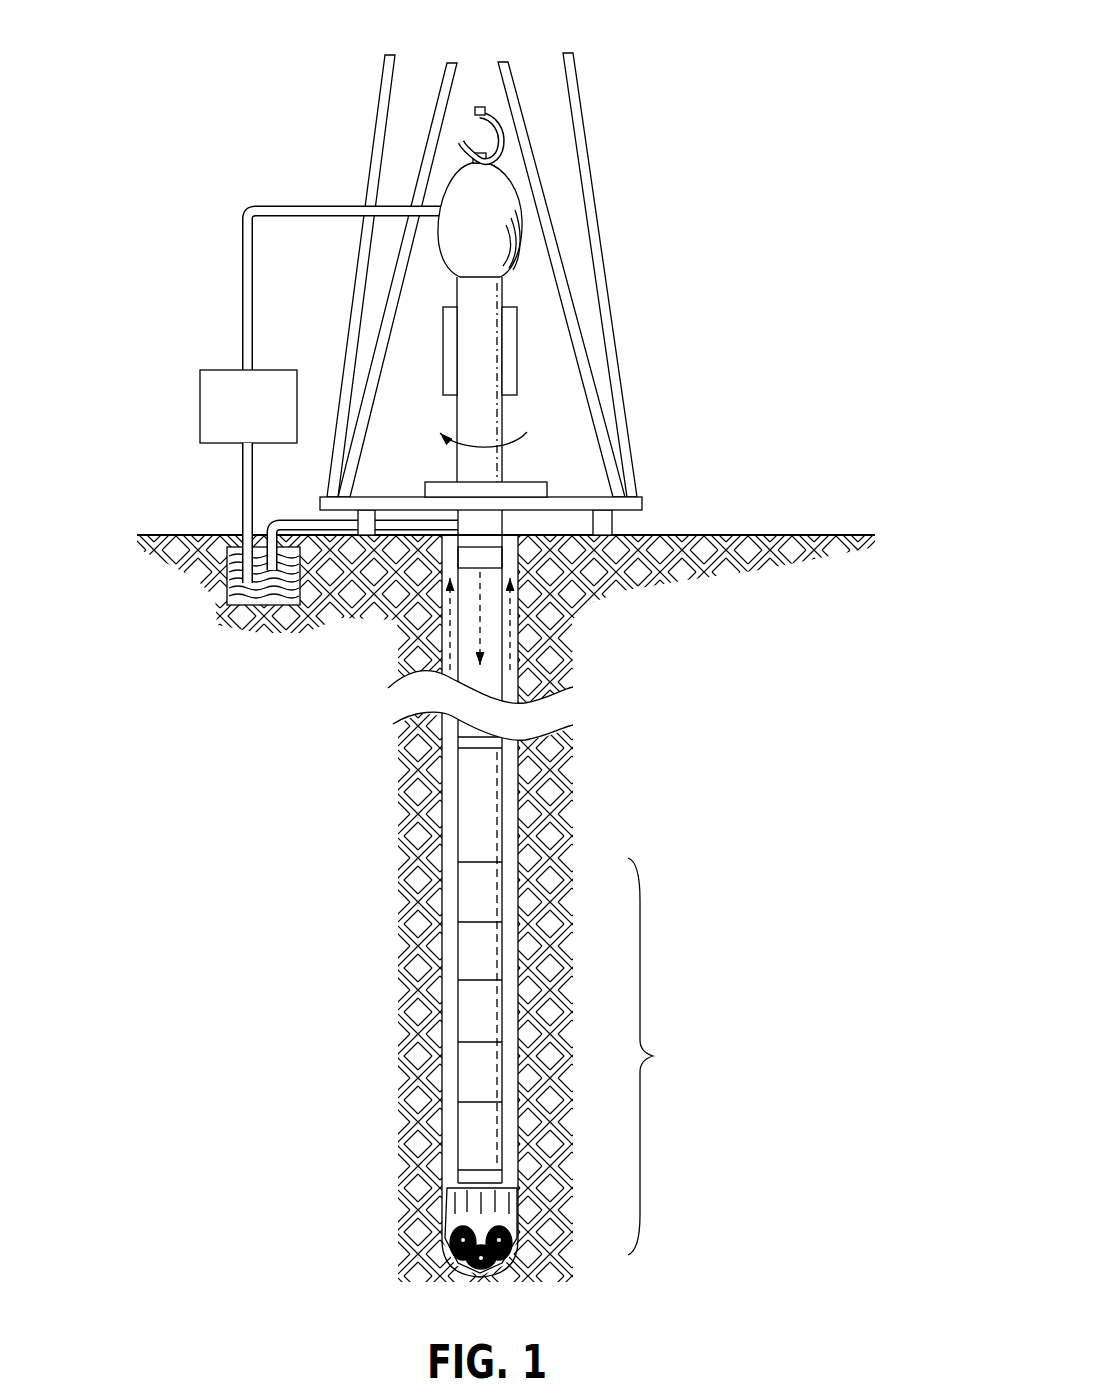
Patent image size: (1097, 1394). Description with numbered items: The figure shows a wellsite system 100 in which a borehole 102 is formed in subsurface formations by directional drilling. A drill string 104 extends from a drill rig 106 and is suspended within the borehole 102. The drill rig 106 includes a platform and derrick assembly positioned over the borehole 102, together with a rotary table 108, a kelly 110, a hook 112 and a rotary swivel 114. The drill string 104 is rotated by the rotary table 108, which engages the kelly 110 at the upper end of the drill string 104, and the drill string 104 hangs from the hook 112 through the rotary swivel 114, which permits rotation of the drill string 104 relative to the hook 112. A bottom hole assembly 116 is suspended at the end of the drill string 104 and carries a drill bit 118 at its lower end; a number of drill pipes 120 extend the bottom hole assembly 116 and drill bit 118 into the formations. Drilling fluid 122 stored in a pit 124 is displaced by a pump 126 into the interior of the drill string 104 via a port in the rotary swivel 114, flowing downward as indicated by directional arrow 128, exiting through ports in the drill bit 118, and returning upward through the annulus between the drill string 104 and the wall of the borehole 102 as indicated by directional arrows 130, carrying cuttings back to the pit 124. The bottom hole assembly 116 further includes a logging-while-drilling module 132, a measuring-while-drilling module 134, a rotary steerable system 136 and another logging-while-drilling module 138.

The wellsite system 100 is at (501, 643).
The borehole 102 is at (512, 540).
The drill string 104 is at (483, 544).
The drill rig 106 is at (374, 126).
The rotary table 108 is at (543, 484).
The kelly 110 is at (458, 478).
The hook 112 is at (479, 107).
The rotary swivel 114 is at (452, 262).
The bottom hole assembly 116 is at (584, 1056).
The drill bit 118 is at (452, 1218).
The drill pipes 120 is at (503, 888).
The drilling fluid 122 is at (285, 593).
The pit 124 is at (231, 538).
The pump 126 is at (224, 370).
The directional arrow 128 is at (483, 637).
The directional arrows 130 is at (444, 635).
The logging-while-drilling module 132 is at (463, 953).
The measuring-while-drilling module 134 is at (463, 1010).
The rotary steerable system 136 is at (463, 1128).
The logging-while-drilling module 138 is at (463, 1070).